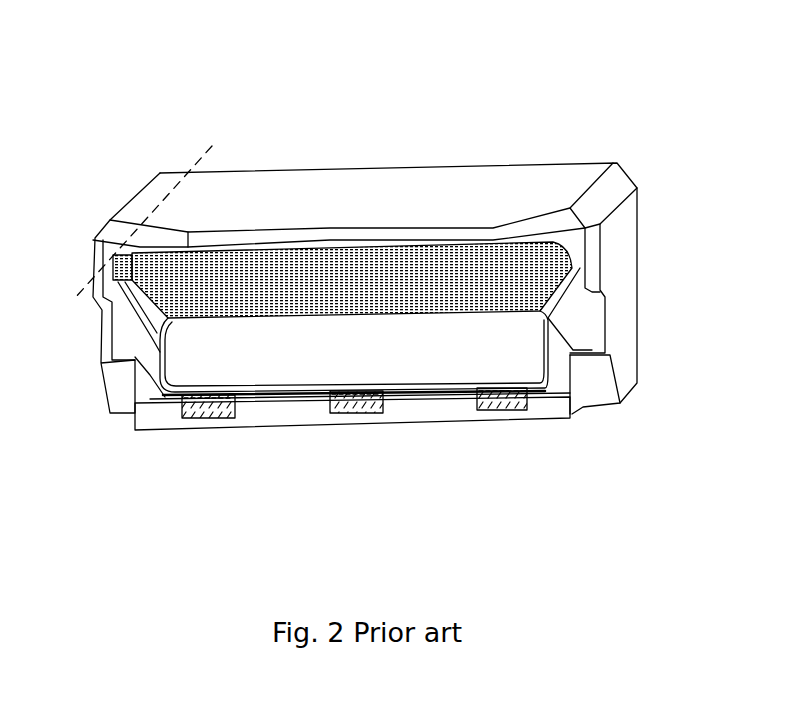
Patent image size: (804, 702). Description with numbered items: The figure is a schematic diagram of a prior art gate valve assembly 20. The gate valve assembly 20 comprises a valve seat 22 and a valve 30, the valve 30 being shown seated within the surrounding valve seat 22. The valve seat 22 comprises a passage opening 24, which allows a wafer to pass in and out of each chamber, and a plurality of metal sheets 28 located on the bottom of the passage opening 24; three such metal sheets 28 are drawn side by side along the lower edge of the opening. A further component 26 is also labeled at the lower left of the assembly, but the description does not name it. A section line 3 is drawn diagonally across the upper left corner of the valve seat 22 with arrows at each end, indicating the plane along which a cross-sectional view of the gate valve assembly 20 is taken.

The line 3— 3 is at (207, 145).
The gate valve assembly 20 is at (575, 58).
The valve seat 22 is at (580, 178).
The passage opening 24 is at (430, 360).
The circuit board 26 is at (150, 380).
The metal sheets 28 is at (212, 420).
The valve 30 is at (360, 296).